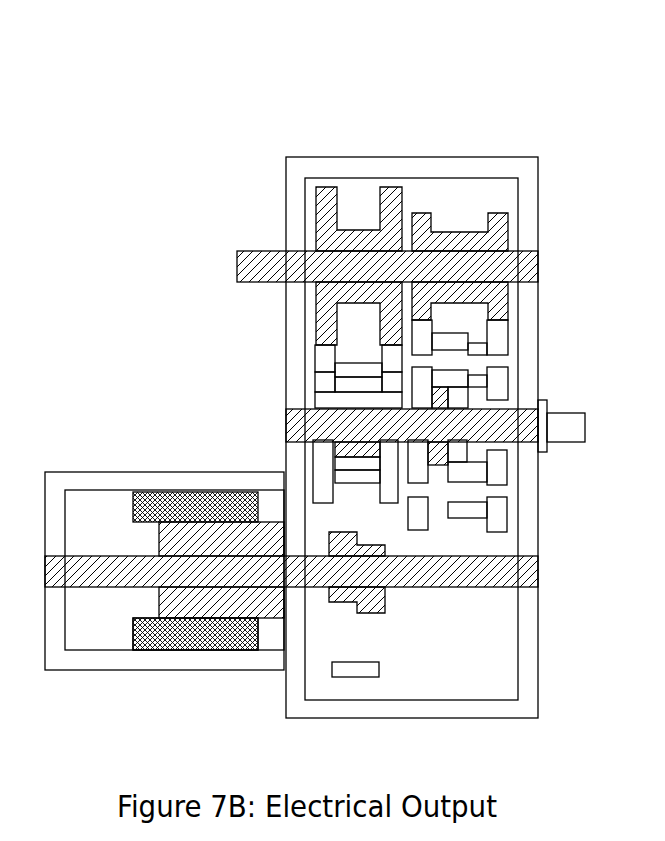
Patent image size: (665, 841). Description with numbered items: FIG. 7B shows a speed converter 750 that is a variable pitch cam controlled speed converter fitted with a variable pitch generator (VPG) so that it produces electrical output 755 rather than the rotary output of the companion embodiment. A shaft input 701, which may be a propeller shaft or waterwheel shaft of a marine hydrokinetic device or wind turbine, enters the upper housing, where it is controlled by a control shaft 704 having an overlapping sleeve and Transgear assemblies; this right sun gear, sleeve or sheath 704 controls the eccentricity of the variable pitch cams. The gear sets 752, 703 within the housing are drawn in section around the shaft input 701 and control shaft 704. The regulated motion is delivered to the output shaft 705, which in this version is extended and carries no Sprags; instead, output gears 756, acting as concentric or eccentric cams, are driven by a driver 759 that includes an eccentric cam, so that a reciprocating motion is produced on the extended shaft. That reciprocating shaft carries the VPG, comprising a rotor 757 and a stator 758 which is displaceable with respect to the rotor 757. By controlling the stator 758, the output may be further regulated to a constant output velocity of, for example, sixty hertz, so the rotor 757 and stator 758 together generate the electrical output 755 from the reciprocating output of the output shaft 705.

The electrical output system 750 is at (232, 108).
The shaft input 701 is at (258, 252).
The first rotor assembly 752 is at (360, 193).
The second rotor assembly 703 is at (453, 207).
The control shaft 704 is at (565, 398).
The output shaft 705 is at (538, 572).
The electrical output 755 is at (153, 650).
The output gears 756 is at (377, 607).
The rotor 757 is at (160, 540).
The stator 758 is at (190, 492).
The driver 759 is at (355, 678).